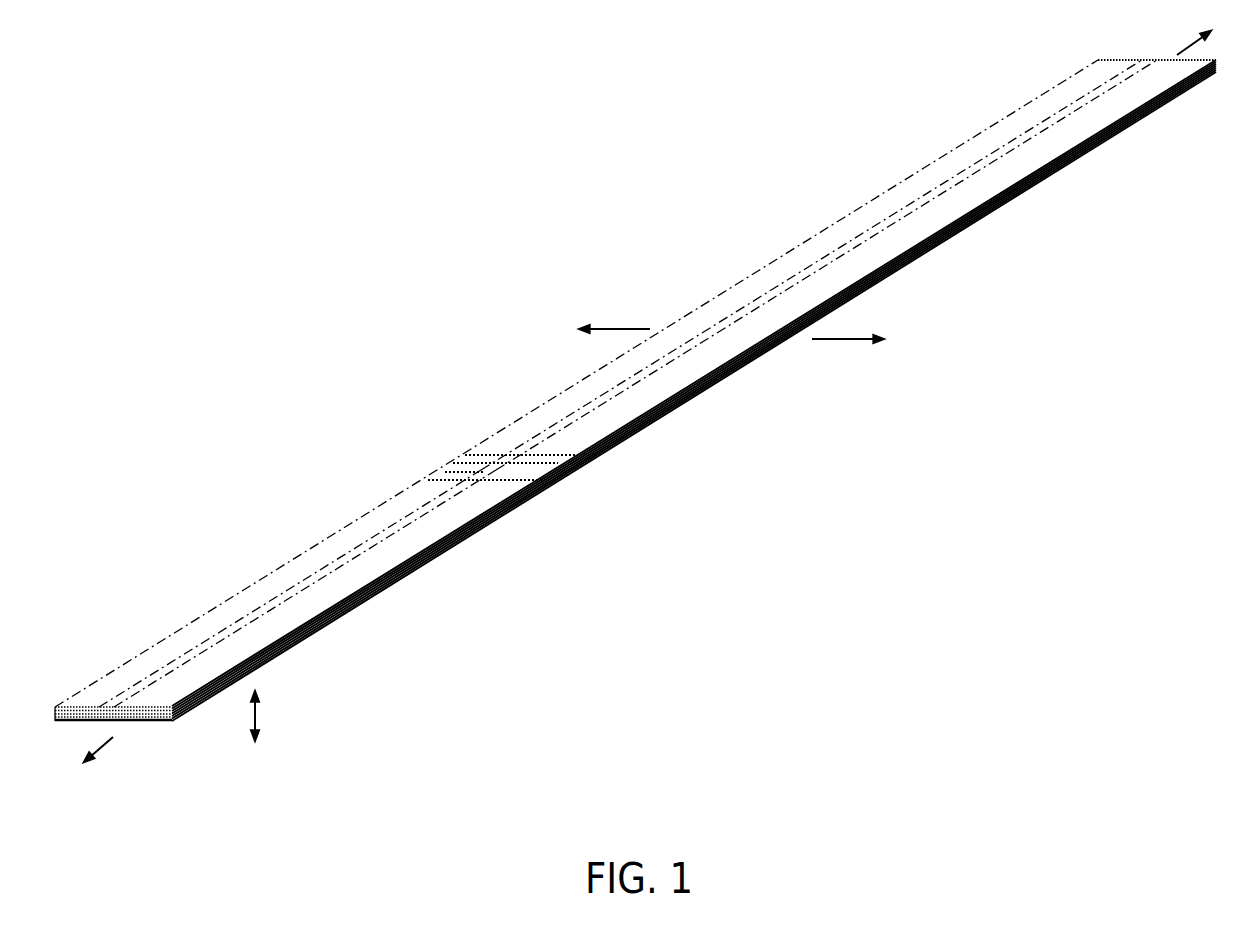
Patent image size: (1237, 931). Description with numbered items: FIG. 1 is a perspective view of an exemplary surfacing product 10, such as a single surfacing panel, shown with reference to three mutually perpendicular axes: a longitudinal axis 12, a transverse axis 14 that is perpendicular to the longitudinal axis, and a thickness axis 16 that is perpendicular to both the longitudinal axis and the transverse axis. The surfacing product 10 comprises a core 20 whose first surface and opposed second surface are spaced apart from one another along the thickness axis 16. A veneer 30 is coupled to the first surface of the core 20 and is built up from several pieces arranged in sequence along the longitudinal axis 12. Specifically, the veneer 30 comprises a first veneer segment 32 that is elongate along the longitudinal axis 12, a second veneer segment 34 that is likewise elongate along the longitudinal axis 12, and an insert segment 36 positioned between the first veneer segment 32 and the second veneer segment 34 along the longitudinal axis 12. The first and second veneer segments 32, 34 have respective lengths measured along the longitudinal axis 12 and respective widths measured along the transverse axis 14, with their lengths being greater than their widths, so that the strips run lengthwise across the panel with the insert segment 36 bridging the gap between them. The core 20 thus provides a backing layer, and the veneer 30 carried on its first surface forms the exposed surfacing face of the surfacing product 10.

The surfacing product 10 is at (635, 375).
The longitudinal axis 12 is at (107, 745).
The transverse axis 14 is at (617, 329).
The thickness axis 16 is at (260, 715).
The core 20 is at (732, 370).
The veneer 30 is at (915, 227).
The first veneer segment 32 is at (810, 273).
The second veneer segment 34 is at (370, 547).
The insert segment 36 is at (463, 465).